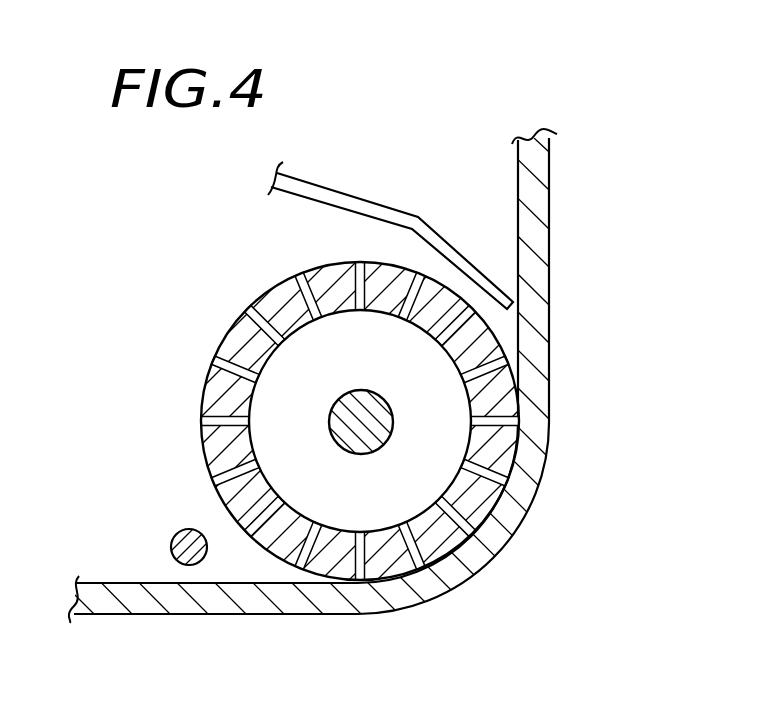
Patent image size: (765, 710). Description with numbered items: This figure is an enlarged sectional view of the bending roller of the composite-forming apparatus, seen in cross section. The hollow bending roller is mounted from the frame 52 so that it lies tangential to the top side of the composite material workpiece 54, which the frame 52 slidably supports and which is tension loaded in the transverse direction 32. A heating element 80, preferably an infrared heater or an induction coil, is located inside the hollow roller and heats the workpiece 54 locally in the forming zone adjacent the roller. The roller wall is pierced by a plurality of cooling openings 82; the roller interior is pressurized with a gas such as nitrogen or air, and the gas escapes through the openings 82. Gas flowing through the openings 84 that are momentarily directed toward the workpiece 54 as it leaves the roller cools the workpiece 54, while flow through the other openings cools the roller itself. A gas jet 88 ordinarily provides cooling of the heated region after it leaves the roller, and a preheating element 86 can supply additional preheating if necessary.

The transverse direction 32 is at (117, 647).
The frame 52 is at (360, 421).
The composite material workpiece 54 is at (278, 610).
The heating element 80 is at (340, 405).
The cooling openings 82 is at (389, 421).
The openings directed toward the workpiece 84 is at (495, 360).
The preheating element 86 is at (175, 536).
The gas jet 88 is at (368, 198).